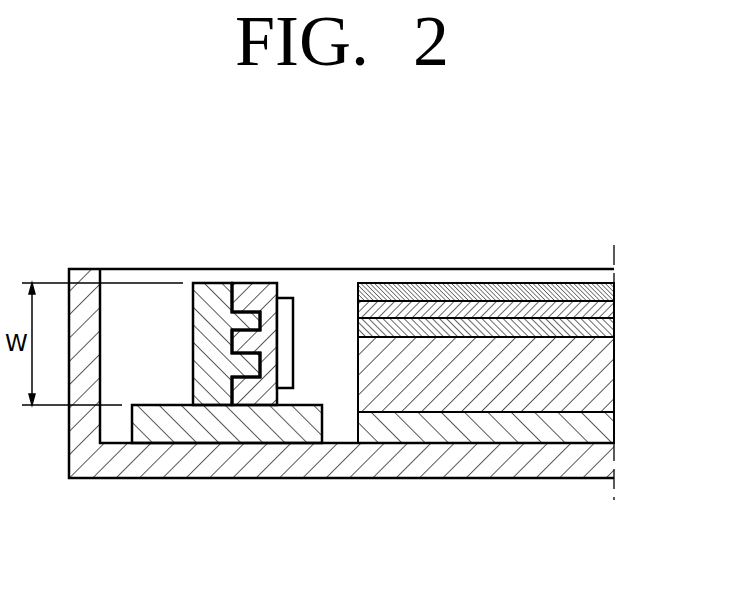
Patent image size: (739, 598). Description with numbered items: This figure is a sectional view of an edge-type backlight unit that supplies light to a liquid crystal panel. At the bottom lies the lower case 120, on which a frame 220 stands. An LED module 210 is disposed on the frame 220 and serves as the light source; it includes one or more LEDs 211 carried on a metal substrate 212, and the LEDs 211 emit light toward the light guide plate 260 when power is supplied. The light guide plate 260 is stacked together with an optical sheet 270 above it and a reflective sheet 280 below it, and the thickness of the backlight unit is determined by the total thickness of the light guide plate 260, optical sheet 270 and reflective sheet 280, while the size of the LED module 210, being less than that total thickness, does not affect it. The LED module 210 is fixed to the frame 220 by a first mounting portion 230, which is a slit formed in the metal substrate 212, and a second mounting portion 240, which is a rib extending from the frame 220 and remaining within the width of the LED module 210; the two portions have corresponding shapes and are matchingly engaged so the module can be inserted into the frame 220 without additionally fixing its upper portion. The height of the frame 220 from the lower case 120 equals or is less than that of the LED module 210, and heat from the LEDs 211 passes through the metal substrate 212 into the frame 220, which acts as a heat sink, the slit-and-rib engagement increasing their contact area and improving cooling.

The lower case 120 is at (157, 473).
The LED module 210 is at (294, 273).
The LED 211 is at (293, 321).
The metal substrate 212 is at (264, 283).
The frame 220 is at (192, 310).
The first mounting portion 230 is at (258, 355).
The second mounting portion 240 is at (260, 312).
The light guide plate 260 is at (603, 372).
The optical sheet 270 is at (621, 283).
The reflective sheet 280 is at (603, 427).